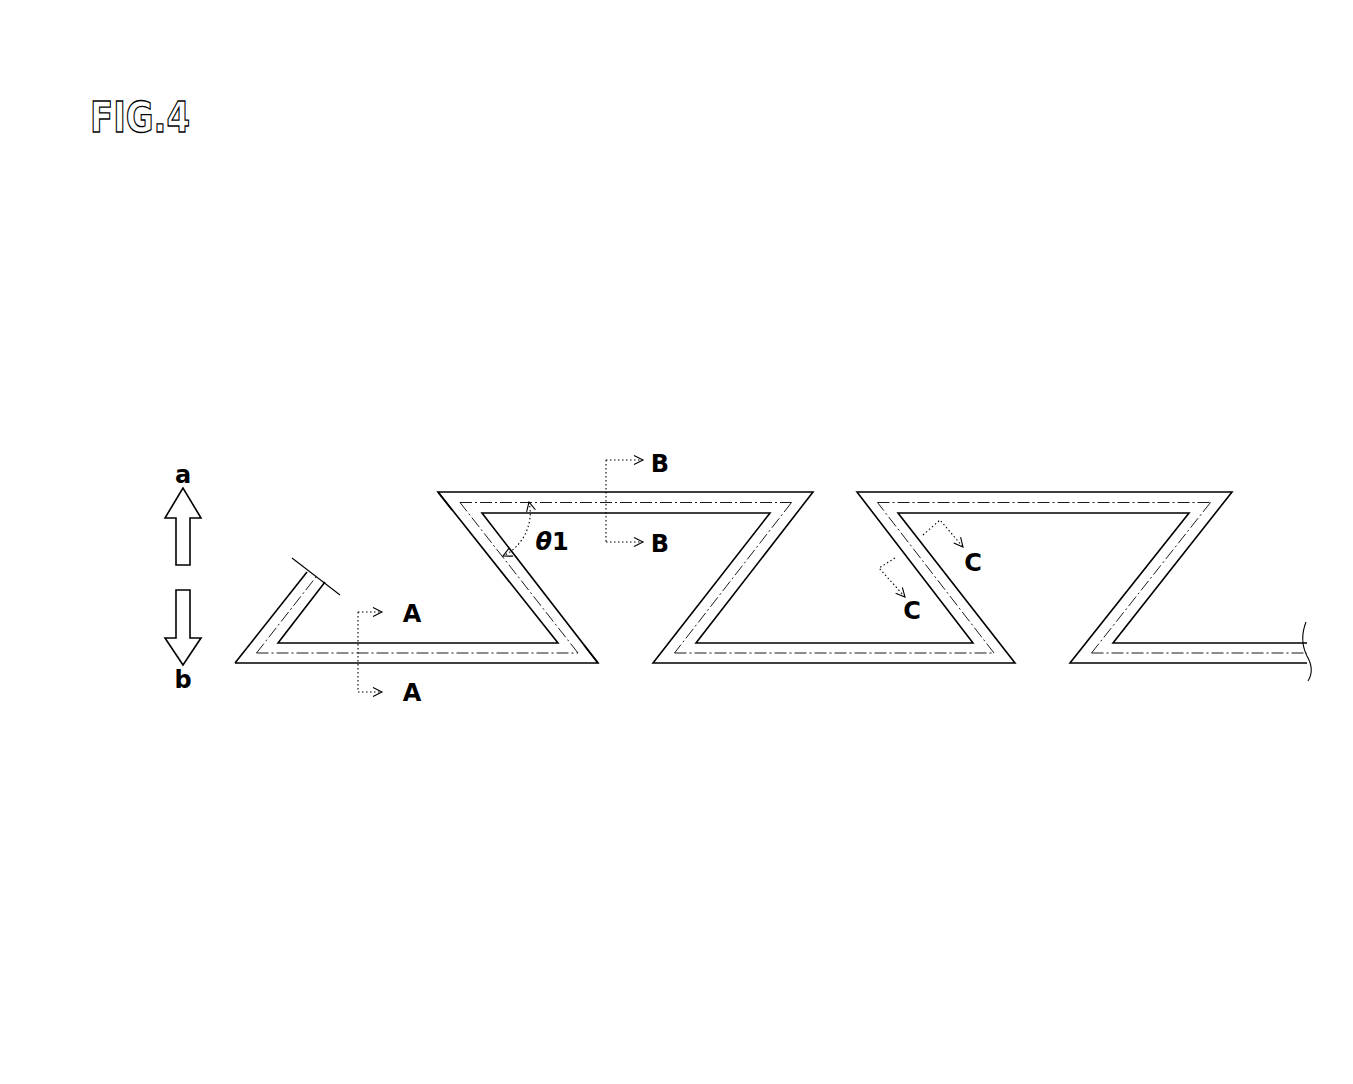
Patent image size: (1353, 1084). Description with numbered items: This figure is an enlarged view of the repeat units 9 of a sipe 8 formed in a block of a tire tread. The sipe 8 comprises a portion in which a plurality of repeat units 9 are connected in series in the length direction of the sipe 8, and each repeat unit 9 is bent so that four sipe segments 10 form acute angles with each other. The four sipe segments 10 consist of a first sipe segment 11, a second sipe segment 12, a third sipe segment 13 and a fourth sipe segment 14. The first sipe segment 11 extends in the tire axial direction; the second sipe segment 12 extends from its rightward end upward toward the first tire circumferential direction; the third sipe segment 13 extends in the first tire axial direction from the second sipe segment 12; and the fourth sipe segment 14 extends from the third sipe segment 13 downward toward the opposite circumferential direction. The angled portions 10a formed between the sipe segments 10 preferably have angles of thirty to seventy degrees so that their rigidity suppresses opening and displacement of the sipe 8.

The sipe 8 is at (333, 553).
The repeat unit 9 is at (360, 520).
The sipe segment 10 is at (698, 495).
The angled portion 10a is at (444, 495).
The first sipe segment 11 is at (467, 657).
The second sipe segment 12 is at (517, 583).
The third sipe segment 13 is at (562, 495).
The fourth sipe segment 14 is at (739, 554).